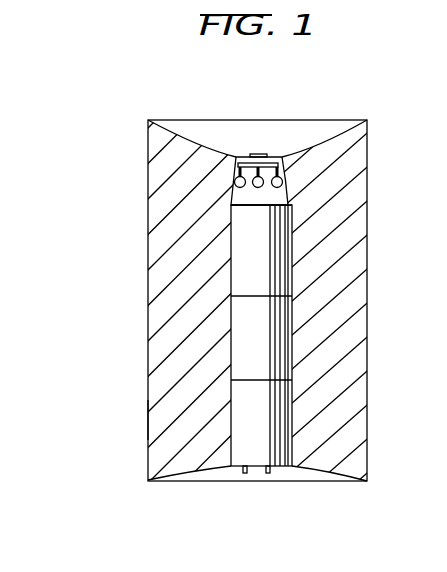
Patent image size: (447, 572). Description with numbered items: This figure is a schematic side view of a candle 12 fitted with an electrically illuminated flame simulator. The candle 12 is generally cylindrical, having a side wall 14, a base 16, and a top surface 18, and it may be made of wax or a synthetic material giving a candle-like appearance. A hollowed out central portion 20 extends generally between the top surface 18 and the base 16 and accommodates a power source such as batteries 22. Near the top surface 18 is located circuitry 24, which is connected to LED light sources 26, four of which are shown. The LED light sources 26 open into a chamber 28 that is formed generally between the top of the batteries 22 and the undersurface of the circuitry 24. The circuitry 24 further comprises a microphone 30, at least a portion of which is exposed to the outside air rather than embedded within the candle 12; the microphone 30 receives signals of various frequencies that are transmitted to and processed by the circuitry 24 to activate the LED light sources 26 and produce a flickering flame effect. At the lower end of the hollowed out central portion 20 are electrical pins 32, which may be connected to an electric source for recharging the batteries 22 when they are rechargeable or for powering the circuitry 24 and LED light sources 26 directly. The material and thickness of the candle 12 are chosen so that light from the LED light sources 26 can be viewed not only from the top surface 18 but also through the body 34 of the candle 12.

The candle 12 is at (132, 167).
The side wall 14 is at (148, 380).
The base 16 is at (291, 483).
The top surface 18 is at (197, 119).
The hollowed out central portion 20 is at (245, 345).
The batteries 22 is at (260, 270).
The circuitry 24 is at (282, 153).
The LED light sources 26 is at (286, 184).
The chamber 28 is at (233, 200).
The microphone 30 is at (259, 153).
The electrical pins 32 is at (245, 483).
The body 34 is at (152, 418).